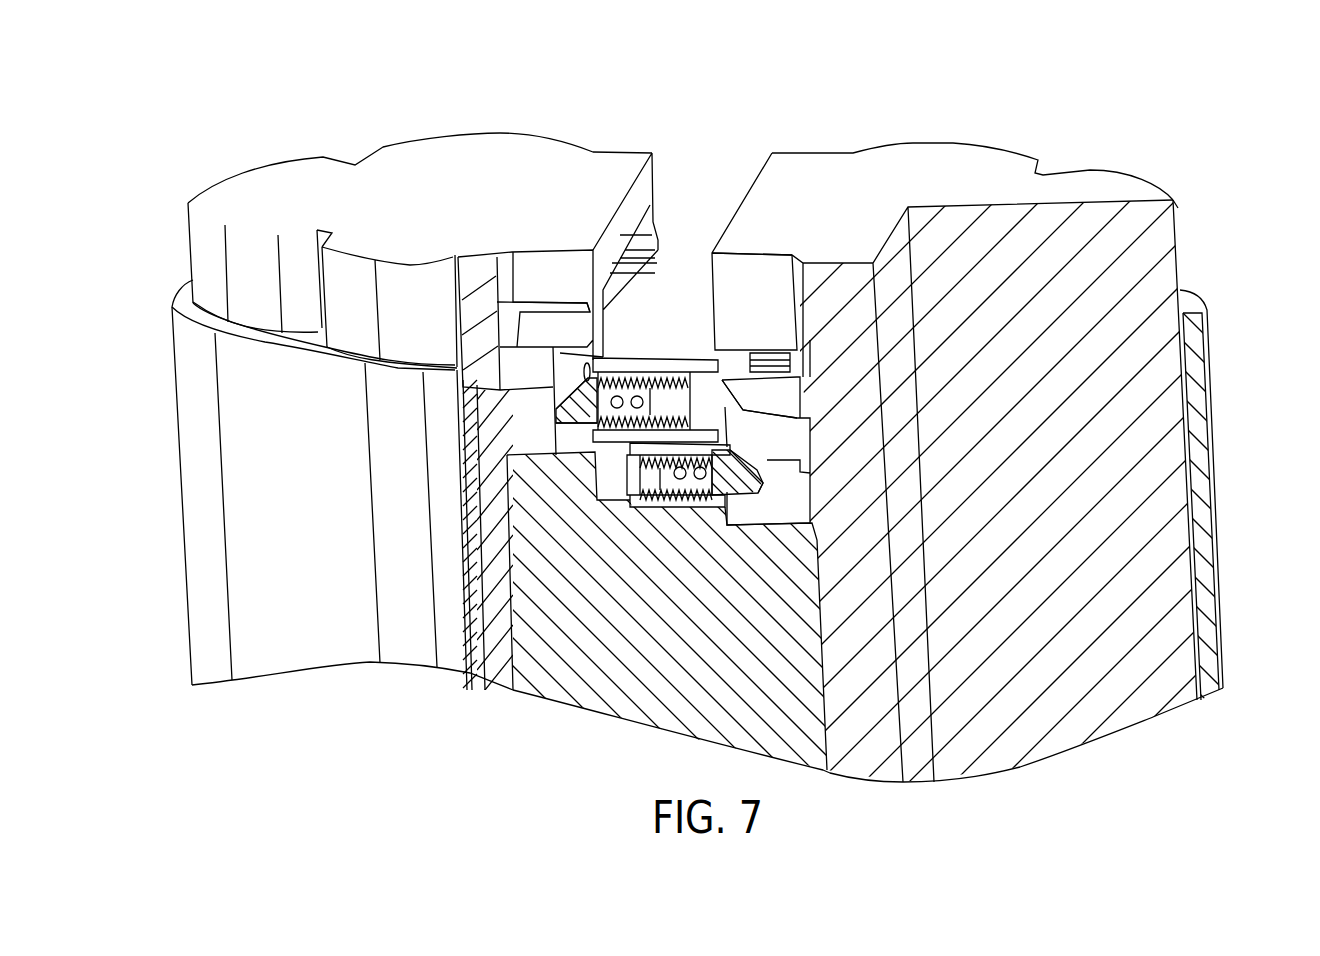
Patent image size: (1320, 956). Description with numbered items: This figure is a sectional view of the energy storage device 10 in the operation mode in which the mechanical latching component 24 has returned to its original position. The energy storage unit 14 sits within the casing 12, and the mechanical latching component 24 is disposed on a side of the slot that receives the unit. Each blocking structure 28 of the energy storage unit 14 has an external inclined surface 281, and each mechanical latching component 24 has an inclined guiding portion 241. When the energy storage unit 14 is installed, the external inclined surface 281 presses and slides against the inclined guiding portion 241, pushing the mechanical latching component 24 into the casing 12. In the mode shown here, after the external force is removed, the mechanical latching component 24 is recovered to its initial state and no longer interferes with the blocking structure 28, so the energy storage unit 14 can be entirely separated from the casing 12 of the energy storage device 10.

The energy storage device 10 is at (1212, 128).
The casing 12 is at (1207, 365).
The energy storage unit 14 is at (507, 165).
The mechanical latching component 24 is at (590, 445).
The blocking structure 28 is at (552, 318).
The inclined guiding portion 241 is at (550, 393).
The external inclined surface 281 is at (585, 332).